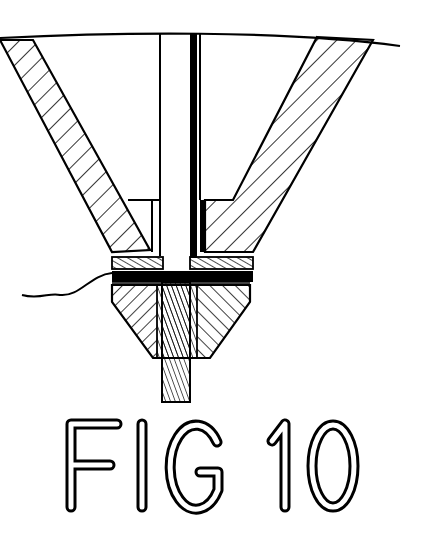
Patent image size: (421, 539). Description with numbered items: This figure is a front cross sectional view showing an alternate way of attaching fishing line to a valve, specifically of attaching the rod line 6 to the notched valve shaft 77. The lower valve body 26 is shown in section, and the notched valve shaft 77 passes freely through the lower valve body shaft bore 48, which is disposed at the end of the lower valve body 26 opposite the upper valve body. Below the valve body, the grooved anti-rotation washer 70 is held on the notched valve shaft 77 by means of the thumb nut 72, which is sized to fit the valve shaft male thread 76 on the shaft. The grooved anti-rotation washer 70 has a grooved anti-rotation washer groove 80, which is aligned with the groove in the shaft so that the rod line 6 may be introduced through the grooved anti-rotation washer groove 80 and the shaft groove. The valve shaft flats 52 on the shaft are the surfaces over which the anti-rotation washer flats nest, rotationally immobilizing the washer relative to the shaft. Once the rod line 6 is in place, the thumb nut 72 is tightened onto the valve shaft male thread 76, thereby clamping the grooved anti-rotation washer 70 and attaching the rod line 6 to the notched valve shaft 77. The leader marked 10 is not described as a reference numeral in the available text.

The rod line 6 is at (58, 293).
The mounting sheet 10 is at (253, 278).
The lower valve body 26 is at (310, 133).
The lower valve body shaft bore 48 is at (215, 228).
The valve shaft flats 52 is at (162, 374).
The grooved anti-rotation washer 70 is at (257, 265).
The thumb nut 72 is at (223, 334).
The valve shaft male thread 76 is at (192, 382).
The notched valve shaft 77 is at (199, 116).
The grooved anti-rotation washer groove 80 is at (250, 287).